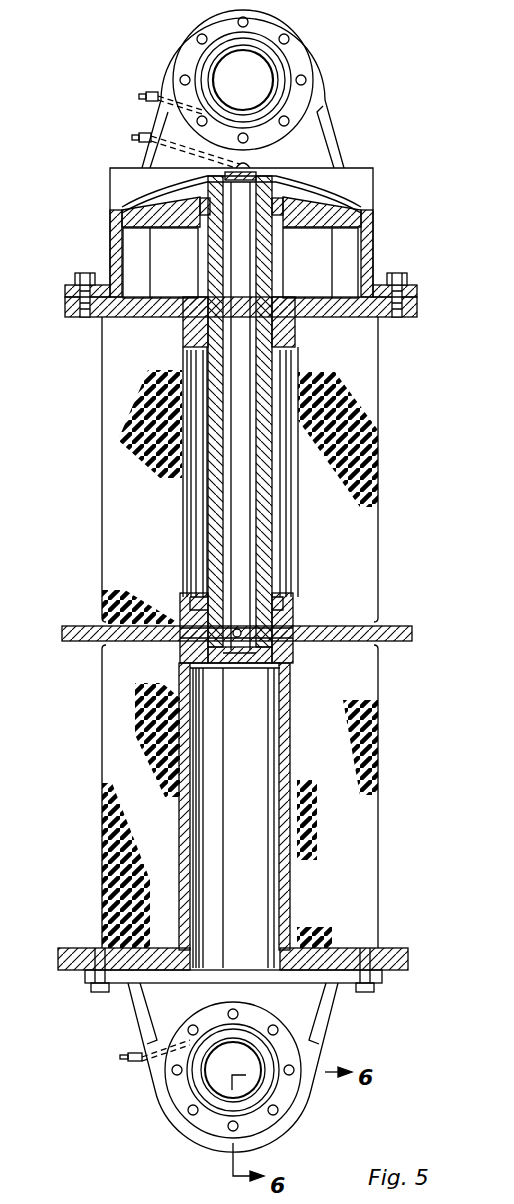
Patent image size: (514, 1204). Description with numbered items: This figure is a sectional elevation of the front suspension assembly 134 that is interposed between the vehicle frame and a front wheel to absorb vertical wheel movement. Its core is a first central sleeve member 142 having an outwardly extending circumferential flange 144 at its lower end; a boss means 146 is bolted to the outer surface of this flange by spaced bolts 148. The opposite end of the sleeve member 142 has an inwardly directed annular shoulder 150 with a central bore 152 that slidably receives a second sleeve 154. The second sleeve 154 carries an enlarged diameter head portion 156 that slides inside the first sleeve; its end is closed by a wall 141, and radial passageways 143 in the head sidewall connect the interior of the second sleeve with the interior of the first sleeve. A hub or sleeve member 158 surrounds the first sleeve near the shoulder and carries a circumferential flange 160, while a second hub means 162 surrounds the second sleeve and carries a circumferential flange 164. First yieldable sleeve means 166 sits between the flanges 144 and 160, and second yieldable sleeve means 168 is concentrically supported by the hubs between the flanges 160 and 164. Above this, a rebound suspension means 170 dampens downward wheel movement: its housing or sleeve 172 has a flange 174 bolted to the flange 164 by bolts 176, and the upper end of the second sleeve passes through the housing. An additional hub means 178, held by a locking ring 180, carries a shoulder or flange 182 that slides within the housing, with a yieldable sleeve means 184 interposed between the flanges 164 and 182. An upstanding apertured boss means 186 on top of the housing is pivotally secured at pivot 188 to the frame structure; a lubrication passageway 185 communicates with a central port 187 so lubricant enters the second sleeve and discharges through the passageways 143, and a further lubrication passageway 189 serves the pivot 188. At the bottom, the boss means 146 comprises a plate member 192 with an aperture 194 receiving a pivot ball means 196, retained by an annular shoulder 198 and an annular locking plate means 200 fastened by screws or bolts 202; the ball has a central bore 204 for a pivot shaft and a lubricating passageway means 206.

The front suspension assembly 134 is at (102, 440).
The wall 141 is at (238, 668).
The first central sleeve member 142 is at (281, 895).
The radially extending bores or passageways 143 is at (233, 636).
The circumferential flange 144 is at (378, 950).
The boss means 146 is at (163, 1094).
The bolts 148 is at (97, 992).
The annular shoulder 150 is at (283, 596).
The central bore 152 is at (204, 583).
The second sleeve 154 is at (263, 549).
The enlarged diameter head portion 156 is at (273, 618).
The hub or sleeve member 158 is at (293, 648).
The circumferential flange 160 is at (78, 640).
The second hub means 162 is at (288, 333).
The circumferential flange 164 is at (98, 305).
The first yieldable sleeve means 166 is at (108, 757).
The second yieldable sleeve means 168 is at (108, 538).
The rebound suspension means 170 is at (372, 248).
The housing or sleeve 172 is at (114, 252).
The flange 174 is at (412, 298).
The bolts 176 is at (397, 284).
The hub means 178 is at (195, 220).
The locking ring 180 is at (283, 216).
The shoulder or flange 182 is at (137, 216).
The yieldable sleeve means 184 is at (177, 292).
The lubrication passageway 185 is at (150, 150).
The upstanding apertured boss means 186 is at (312, 124).
The central port 187 is at (250, 167).
The pivot 188 is at (248, 62).
The lubrication passageway 189 is at (150, 103).
The plate member 192 is at (282, 1126).
The aperture 194 is at (14, 915).
The pivot ball means 196 is at (222, 1032).
The annular shoulder 198 is at (17, 965).
The annular locking plate means 200 is at (287, 1095).
The screws or bolts 202 is at (190, 1118).
The central bore 204 is at (250, 1052).
The lubricating passageway means 206 is at (170, 1058).